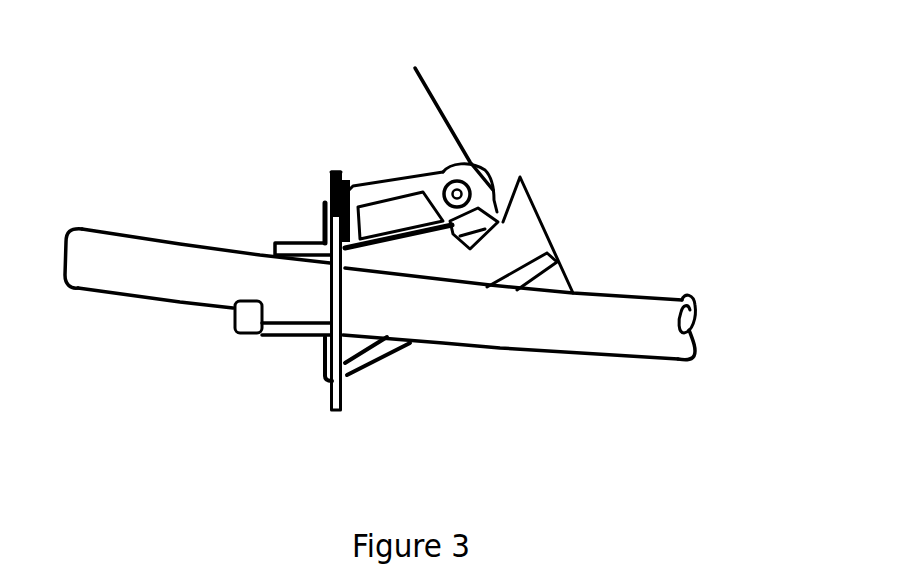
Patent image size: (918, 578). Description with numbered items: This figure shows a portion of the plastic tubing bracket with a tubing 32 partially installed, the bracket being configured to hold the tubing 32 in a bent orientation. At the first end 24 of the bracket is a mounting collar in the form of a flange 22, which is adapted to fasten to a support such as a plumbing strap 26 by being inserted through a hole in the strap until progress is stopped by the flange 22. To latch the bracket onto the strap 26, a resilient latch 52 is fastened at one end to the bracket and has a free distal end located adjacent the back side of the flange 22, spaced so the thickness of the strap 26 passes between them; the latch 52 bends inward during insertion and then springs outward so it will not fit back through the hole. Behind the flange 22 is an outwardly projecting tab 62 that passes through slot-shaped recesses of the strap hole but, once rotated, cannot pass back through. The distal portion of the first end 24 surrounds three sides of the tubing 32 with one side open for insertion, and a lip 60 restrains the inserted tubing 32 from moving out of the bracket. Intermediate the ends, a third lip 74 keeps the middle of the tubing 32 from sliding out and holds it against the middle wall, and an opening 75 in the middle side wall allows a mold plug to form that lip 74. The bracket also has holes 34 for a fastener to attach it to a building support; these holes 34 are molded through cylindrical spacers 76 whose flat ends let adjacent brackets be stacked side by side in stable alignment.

The flange 22 is at (322, 218).
The first end 24 is at (320, 448).
The plumbing strap 26 is at (331, 178).
The tubing 32 is at (638, 312).
The holes 34 is at (487, 195).
The latch 52 is at (382, 364).
The lip 60 is at (243, 313).
The tab 62 is at (379, 180).
The third lip 74 is at (505, 225).
The opening 75 is at (497, 233).
The spacers 76 is at (468, 157).